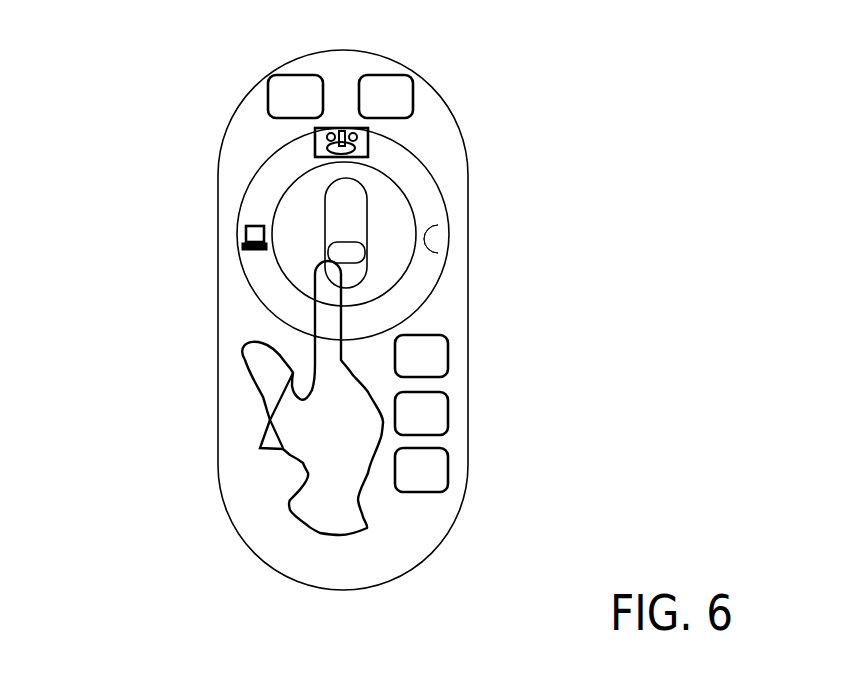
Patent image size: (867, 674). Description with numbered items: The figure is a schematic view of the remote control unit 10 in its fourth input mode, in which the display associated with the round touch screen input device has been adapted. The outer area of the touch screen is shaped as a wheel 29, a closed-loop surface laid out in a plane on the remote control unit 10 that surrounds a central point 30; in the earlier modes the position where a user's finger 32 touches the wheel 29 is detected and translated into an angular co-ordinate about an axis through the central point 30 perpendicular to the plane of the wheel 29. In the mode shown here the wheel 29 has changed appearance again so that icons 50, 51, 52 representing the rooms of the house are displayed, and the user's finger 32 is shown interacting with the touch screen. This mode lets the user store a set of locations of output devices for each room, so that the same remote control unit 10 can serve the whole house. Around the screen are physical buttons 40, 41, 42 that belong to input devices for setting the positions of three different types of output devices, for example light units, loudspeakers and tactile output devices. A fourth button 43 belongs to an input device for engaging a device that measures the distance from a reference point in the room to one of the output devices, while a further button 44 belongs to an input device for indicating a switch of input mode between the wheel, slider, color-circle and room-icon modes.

The remote control unit 10 is at (100, 74).
The wheel 29 is at (256, 175).
The central point 30 is at (341, 207).
The user's finger 32 is at (330, 321).
The button 40 is at (440, 357).
The button 41 is at (440, 415).
The button 42 is at (440, 473).
The fourth button 43 is at (268, 98).
The further button 44 is at (413, 96).
The icon 50 is at (242, 247).
The icon 51 is at (369, 143).
The icon 52 is at (444, 233).